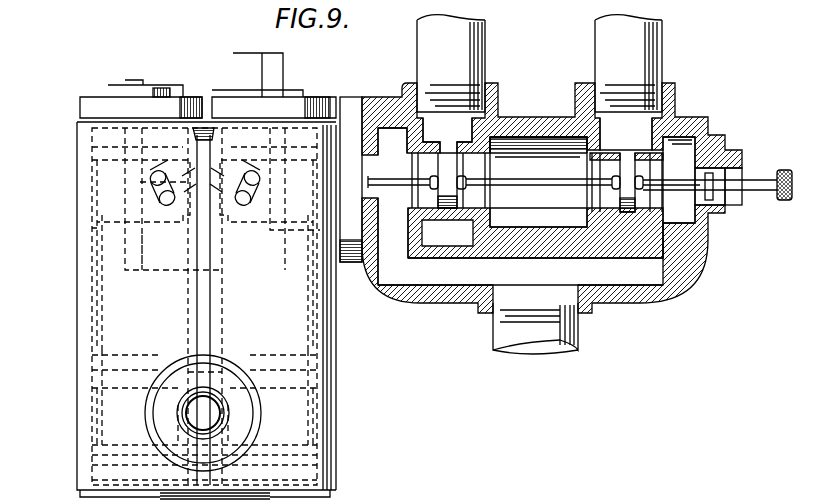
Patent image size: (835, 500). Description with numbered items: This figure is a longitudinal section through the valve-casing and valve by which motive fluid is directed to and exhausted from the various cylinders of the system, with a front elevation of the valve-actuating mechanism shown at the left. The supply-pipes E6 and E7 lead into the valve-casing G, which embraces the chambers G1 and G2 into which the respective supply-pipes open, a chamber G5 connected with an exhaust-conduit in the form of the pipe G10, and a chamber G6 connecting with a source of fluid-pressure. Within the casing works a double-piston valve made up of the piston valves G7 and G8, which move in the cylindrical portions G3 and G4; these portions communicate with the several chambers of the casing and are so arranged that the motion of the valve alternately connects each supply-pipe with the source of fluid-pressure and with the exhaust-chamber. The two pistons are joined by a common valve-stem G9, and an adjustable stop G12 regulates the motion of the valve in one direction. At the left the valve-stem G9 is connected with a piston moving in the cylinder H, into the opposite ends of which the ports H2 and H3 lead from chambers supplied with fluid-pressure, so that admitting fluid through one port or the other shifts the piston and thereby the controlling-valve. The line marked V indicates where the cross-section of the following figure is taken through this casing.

The cylinder H is at (143, 234).
The port H2 is at (163, 178).
The port H3 is at (240, 178).
The section line v v V is at (145, 177).
The valve-casing G is at (541, 198).
The chamber G1 is at (447, 135).
The chamber G2 is at (626, 134).
The cylindrical portion G3 is at (415, 198).
The cylindrical portion G4 is at (538, 156).
The exhaust chamber G5 is at (520, 255).
The pressure chamber G6 is at (538, 182).
The piston valve G7 is at (448, 180).
The piston valve G8 is at (626, 182).
The valve-stem G9 is at (392, 148).
The exhaust pipe G10 is at (535, 328).
The adjustable stop G12 is at (693, 200).
The supply-pipe E6 is at (628, 63).
The supply-pipe E7 is at (451, 63).